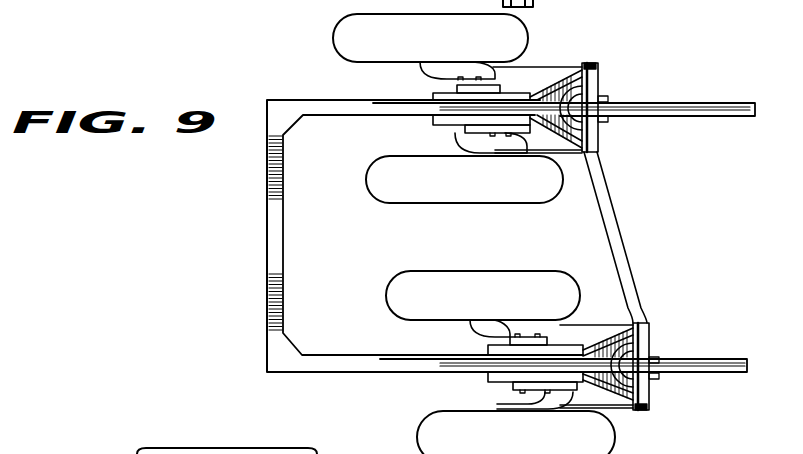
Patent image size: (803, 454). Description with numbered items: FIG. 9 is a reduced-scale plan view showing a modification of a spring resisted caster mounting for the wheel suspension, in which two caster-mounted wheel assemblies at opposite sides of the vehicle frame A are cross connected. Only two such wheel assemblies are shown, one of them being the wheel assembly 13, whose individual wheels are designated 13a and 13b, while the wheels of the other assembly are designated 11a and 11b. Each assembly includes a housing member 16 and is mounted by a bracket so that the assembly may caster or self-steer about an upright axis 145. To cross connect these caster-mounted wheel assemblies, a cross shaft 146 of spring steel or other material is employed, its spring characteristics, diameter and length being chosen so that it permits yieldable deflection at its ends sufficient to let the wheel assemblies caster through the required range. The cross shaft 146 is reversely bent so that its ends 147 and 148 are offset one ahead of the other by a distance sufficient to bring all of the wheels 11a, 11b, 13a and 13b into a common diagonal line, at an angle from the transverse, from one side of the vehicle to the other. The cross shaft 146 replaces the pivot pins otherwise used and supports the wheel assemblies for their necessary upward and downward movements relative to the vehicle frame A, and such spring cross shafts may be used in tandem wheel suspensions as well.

The vehicle frame A is at (267, 318).
The wheel 11a is at (516, 432).
The wheel 11b is at (483, 295).
The wheel assembly 13 is at (530, 37).
The wheel 13a is at (464, 179).
The wheel 13b is at (430, 38).
The housing member 16 is at (537, 90).
The upright axis 145 is at (607, 105).
The cross shaft 146 is at (624, 238).
The end of cross shaft 147 is at (600, 79).
The end of cross shaft 148 is at (655, 337).